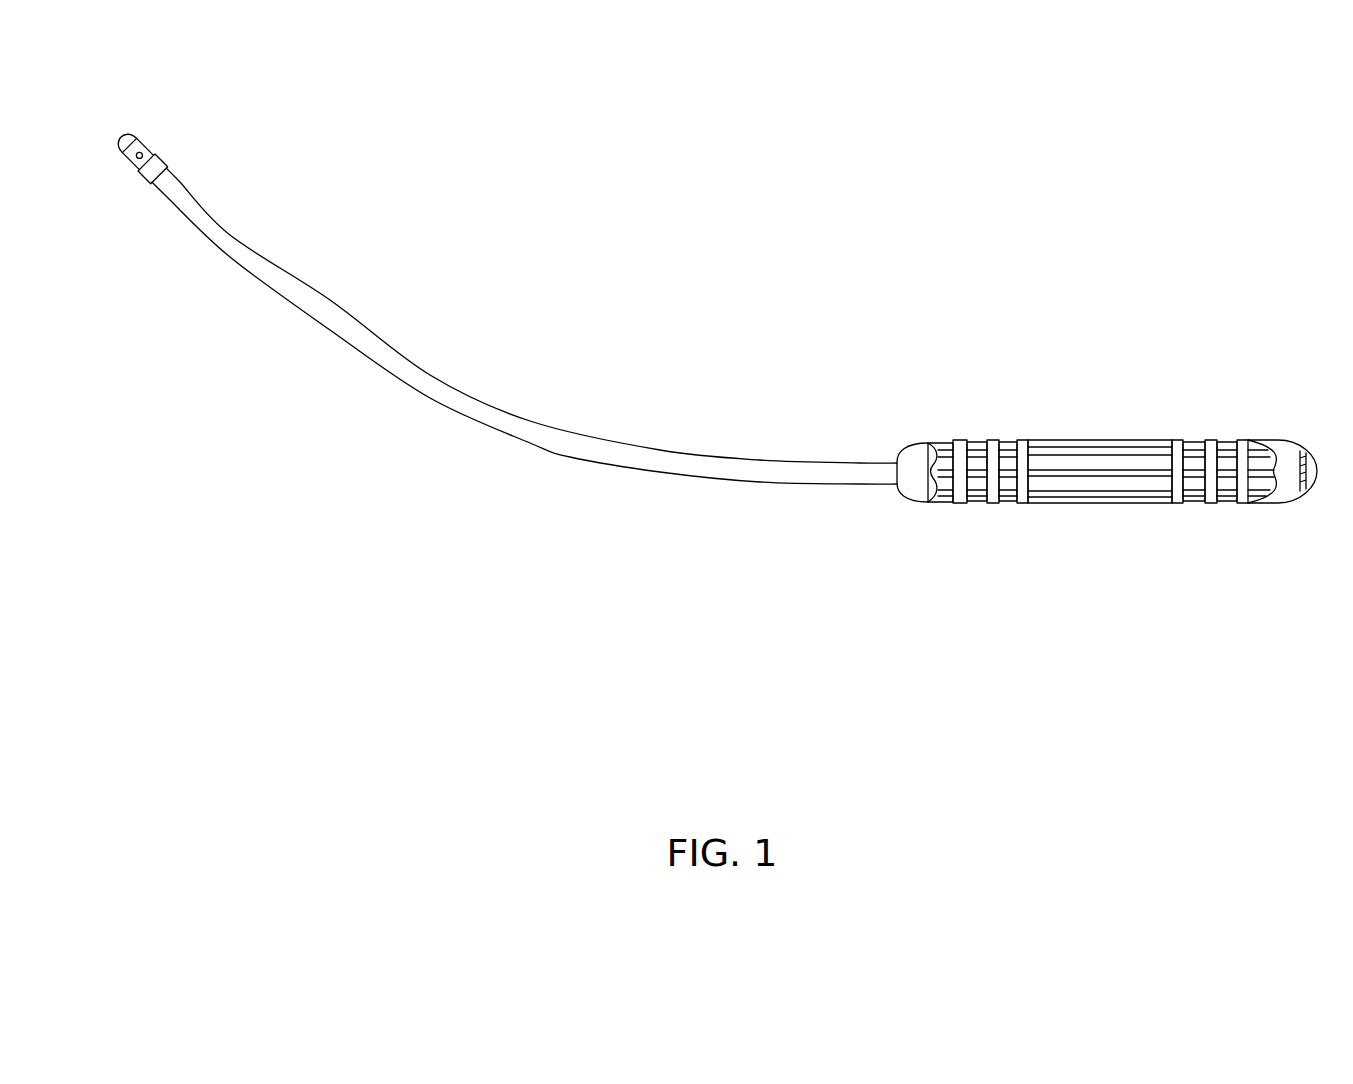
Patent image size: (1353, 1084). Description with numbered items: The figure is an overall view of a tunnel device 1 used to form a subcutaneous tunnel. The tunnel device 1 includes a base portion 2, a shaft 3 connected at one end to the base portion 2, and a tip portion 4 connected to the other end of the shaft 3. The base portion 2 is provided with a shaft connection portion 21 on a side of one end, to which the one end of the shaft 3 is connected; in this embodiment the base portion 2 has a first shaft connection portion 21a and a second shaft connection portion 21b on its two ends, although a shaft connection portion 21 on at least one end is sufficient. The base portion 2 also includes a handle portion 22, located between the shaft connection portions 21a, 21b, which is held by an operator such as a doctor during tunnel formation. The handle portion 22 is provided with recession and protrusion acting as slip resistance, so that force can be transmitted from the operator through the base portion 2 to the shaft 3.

The tunnel device 1 is at (905, 195).
The base portion 2 is at (1135, 433).
The shaft 3 is at (527, 418).
The tip portion 4 is at (142, 177).
The shaft connection portion 21 is at (995, 723).
The first shaft connection portion 21a is at (912, 505).
The second shaft connection portion 21b is at (1285, 505).
The handle portion 22 is at (1082, 460).